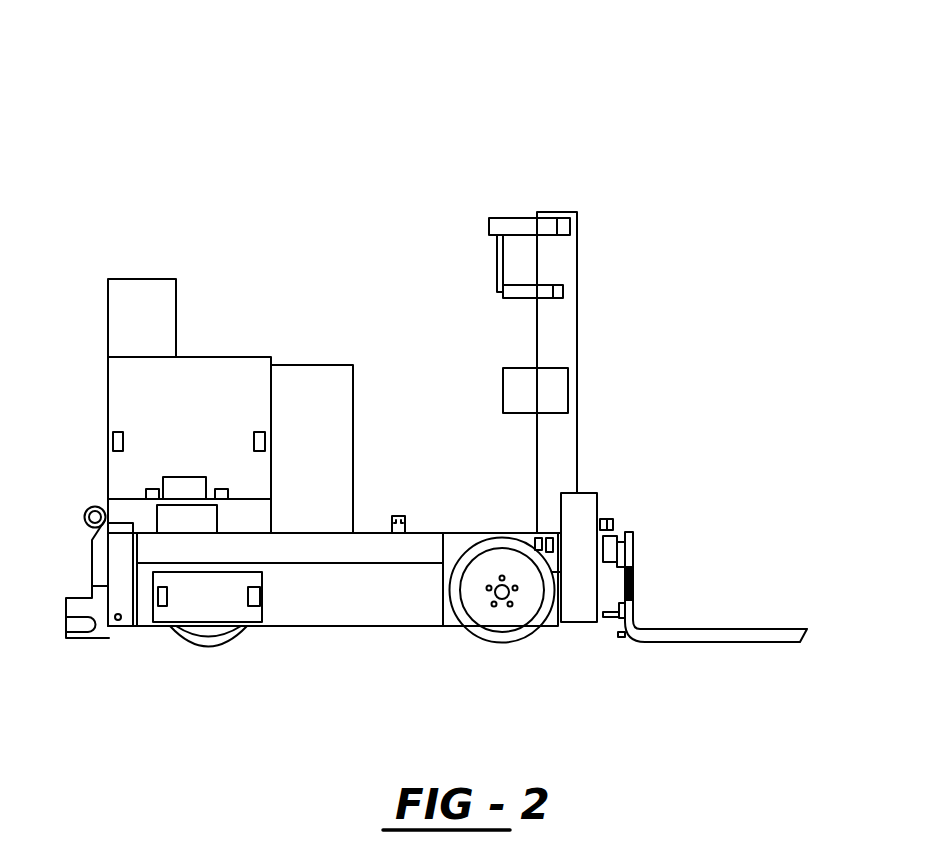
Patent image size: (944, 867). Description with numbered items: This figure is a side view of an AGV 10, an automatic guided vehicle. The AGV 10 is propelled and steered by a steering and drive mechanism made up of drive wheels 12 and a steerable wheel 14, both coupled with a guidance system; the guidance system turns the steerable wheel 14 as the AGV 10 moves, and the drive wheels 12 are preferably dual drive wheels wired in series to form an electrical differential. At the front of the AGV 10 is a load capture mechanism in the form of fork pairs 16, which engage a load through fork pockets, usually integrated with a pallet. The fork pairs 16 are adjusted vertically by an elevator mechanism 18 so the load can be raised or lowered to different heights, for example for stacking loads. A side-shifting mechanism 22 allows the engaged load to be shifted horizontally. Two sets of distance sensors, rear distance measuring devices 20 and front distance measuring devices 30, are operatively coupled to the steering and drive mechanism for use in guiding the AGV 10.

The AGV 10 is at (206, 158).
The drive wheels 12 is at (500, 628).
The steerable wheel 14 is at (220, 637).
The fork pairs 16 is at (802, 637).
The elevator mechanism 18 is at (510, 217).
The rear distance measuring devices 20 is at (610, 517).
The side-shifting mechanism 22 is at (615, 627).
The front distance measuring devices 30 is at (395, 514).